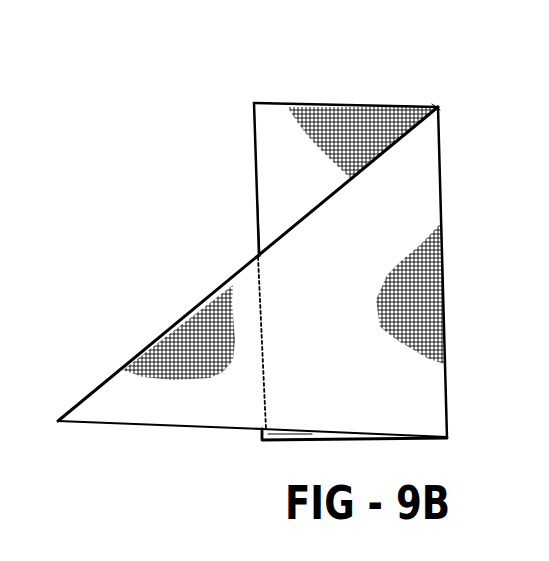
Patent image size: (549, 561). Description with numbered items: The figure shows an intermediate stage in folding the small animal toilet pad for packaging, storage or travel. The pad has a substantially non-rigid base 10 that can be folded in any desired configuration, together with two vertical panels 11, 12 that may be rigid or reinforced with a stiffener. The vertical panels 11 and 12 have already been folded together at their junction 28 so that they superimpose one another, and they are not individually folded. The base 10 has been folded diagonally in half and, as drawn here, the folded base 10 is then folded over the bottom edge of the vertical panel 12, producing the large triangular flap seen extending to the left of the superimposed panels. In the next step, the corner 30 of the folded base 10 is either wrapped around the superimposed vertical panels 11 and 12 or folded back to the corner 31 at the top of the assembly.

The base 10 is at (423, 203).
The vertical panel 11 is at (258, 213).
The vertical panel 12 is at (268, 147).
The junction 28 is at (344, 104).
The corner 30 is at (108, 419).
The corner 31 is at (438, 107).